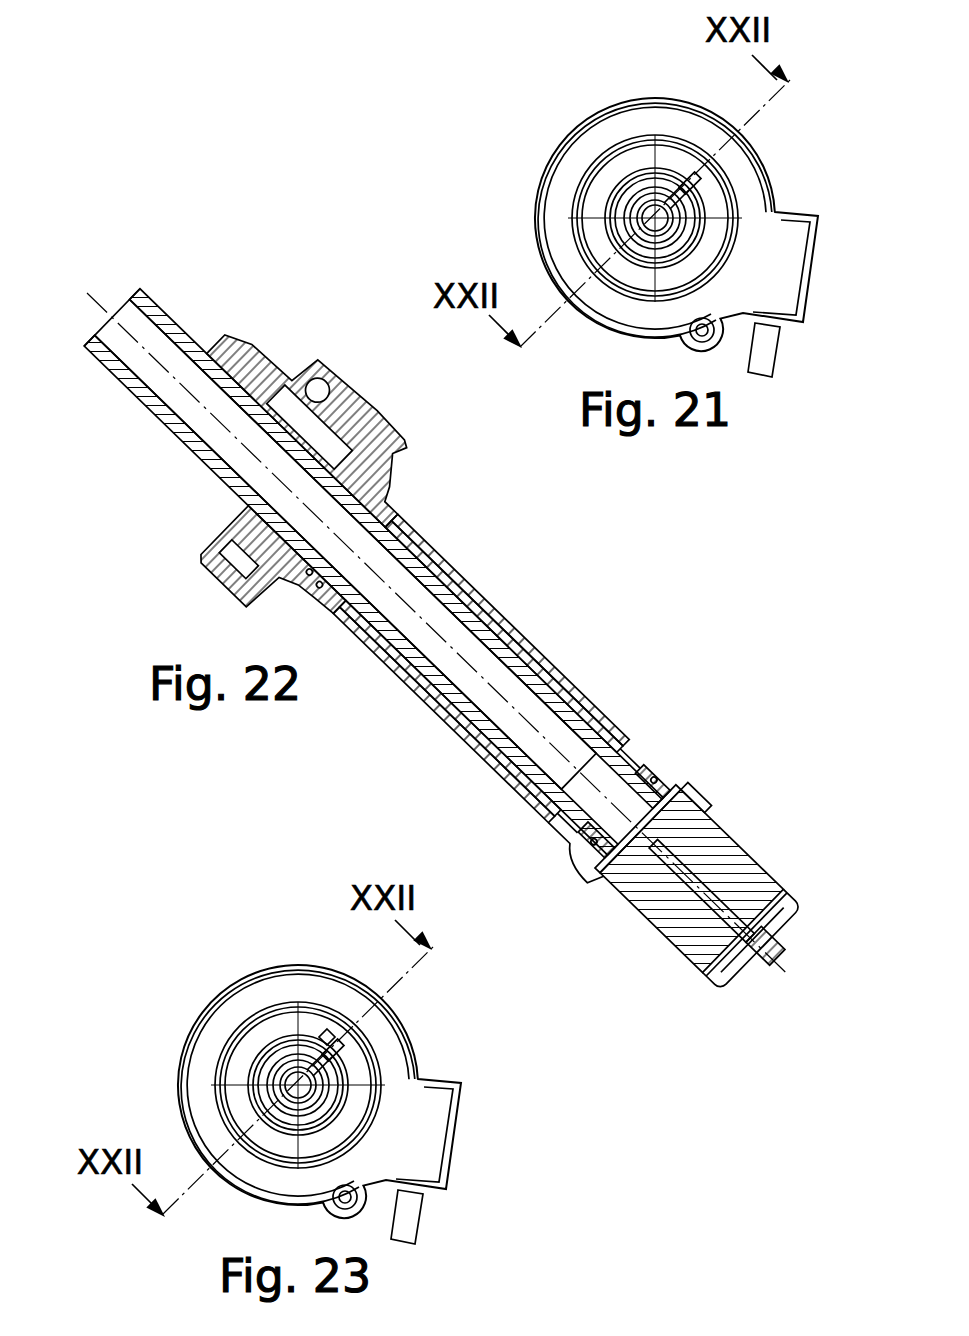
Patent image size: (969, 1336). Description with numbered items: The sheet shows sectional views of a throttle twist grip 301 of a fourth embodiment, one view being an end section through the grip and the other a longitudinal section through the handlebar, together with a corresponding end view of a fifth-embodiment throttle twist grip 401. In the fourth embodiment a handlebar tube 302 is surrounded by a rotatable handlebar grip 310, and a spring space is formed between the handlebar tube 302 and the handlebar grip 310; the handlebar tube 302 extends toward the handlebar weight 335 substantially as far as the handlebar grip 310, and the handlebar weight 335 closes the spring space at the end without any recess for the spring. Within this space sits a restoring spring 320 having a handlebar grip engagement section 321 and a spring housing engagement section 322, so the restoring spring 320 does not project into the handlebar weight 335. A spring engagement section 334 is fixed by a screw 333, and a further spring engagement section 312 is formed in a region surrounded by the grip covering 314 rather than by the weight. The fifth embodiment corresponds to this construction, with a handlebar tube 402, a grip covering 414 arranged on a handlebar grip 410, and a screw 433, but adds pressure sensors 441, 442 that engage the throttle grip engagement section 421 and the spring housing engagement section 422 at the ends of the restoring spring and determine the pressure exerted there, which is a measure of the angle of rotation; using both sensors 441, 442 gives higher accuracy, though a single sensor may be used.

In FIG. 21, the throttle twist grip 301 is at (548, 96).
In FIG. 22, the throttle twist grip 301 is at (532, 535).
In FIG. 21, the handlebar tube 302 is at (643, 247).
In FIG. 22, the handlebar tube 302 is at (170, 328).
In FIG. 21, the handlebar grip 310 is at (625, 190).
In FIG. 22, the handlebar grip 310 is at (548, 668).
In FIG. 22, the spring engagement section 312 is at (687, 790).
In FIG. 21, the grip covering 314 is at (573, 228).
In FIG. 22, the grip covering 314 is at (445, 720).
In FIG. 22, the restoring spring 320 is at (580, 833).
In FIG. 21, the handlebar grip engagement section 321 is at (697, 178).
In FIG. 22, the handlebar grip engagement section 321 is at (700, 797).
In FIG. 21, the spring housing engagement section 322 is at (608, 180).
In FIG. 22, the spring housing engagement section 322 is at (657, 777).
In FIG. 21, the screw 333 is at (668, 230).
In FIG. 22, the screw 333 is at (700, 890).
In FIG. 22, the spring engagement section 334 is at (637, 763).
In FIG. 22, the handlebar weight 335 is at (727, 837).
In FIG. 23, the throttle twist grip 401 is at (190, 966).
In FIG. 23, the handlebar tube 402 is at (286, 1114).
In FIG. 23, the handlebar grip 410 is at (268, 1057).
In FIG. 23, the grip covering 414 is at (216, 1095).
In FIG. 23, the throttle grip engagement section 421 is at (340, 1045).
In FIG. 23, the spring housing engagement section 422 is at (252, 1048).
In FIG. 23, the screw 433 is at (316, 1100).
In FIG. 23, the pressure sensor 441 is at (327, 1029).
In FIG. 23, the pressure sensor 442 is at (312, 1090).